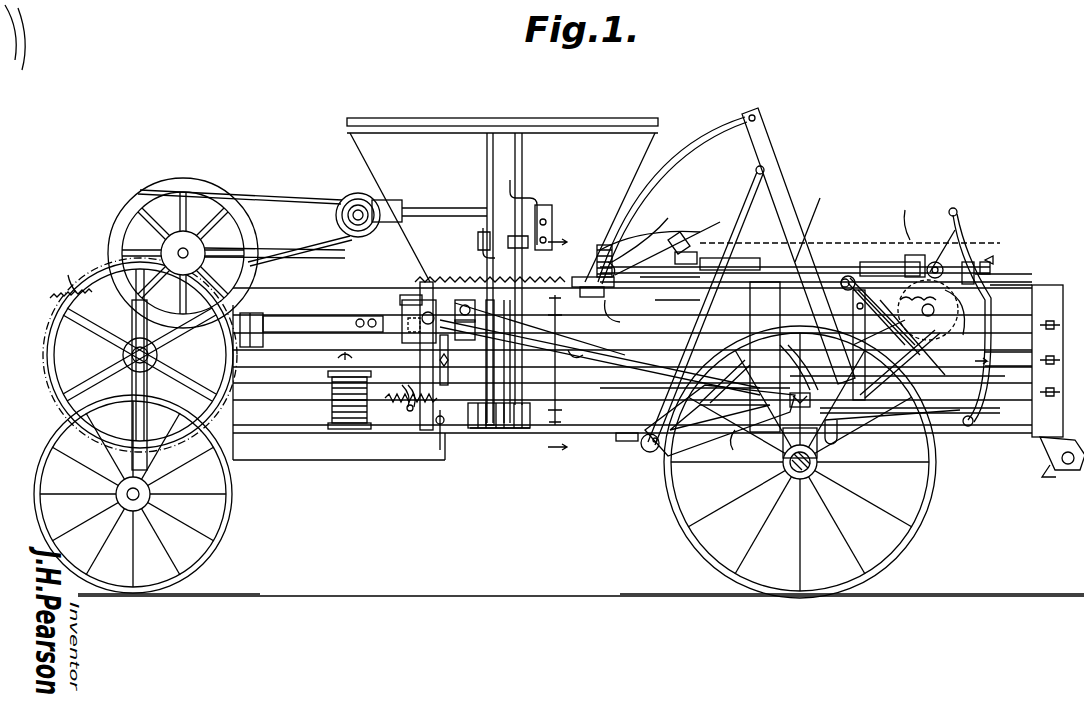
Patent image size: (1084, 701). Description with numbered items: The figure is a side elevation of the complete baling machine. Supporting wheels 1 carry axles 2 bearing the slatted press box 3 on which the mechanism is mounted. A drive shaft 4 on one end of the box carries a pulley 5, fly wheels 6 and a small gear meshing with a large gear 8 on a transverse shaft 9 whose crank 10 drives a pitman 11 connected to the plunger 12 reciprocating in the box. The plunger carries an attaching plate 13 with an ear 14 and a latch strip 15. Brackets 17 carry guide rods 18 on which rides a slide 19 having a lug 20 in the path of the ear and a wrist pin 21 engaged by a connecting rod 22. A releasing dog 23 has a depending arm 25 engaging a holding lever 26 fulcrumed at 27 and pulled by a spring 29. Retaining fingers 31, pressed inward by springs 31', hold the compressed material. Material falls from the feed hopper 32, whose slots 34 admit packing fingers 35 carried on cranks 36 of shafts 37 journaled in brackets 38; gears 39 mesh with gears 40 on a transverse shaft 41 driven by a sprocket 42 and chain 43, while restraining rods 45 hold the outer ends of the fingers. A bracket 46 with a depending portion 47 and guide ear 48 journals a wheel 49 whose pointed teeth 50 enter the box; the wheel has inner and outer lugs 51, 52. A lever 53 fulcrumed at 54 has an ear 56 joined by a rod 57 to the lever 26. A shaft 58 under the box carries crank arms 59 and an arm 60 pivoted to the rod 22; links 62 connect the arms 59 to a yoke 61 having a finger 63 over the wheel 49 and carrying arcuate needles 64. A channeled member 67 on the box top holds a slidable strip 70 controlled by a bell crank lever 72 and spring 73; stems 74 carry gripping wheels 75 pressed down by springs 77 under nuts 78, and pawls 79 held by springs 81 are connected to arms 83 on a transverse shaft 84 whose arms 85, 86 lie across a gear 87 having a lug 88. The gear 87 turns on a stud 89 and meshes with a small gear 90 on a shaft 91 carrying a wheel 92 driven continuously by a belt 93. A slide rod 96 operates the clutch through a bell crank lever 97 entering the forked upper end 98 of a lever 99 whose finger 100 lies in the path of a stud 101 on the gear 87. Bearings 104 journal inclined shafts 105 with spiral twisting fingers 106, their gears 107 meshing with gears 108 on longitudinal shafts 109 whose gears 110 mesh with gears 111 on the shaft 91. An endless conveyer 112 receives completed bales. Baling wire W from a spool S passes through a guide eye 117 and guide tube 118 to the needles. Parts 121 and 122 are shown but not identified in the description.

The supporting wheels 1 is at (222, 540).
The axles 2 is at (150, 492).
The press box 3 is at (1035, 292).
The drive shaft 4 is at (186, 250).
The pulley 5 is at (186, 238).
The fly wheels 6 is at (133, 208).
The large gear 8 is at (70, 280).
The transverse shaft 9 is at (132, 355).
The crank 10 is at (95, 308).
The pitman 11 is at (110, 296).
The plunger 12 is at (300, 385).
The attaching plate 13 is at (258, 318).
The laterally projecting ear 14 is at (252, 340).
The latch strip 15 is at (318, 318).
The brackets 17 is at (382, 353).
The guide rods 18 is at (365, 315).
The slide 19 is at (407, 304).
The lug 20 is at (490, 342).
The wrist pin 21 is at (440, 300).
The connecting rod 22 is at (612, 365).
The releasing dog 23 is at (470, 300).
The depending arm 25 is at (448, 358).
The holding lever 26 is at (444, 425).
The fulcrum 27 is at (450, 438).
The spring 29 is at (405, 405).
The retaining fingers 31 is at (582, 367).
The springs 31' is at (540, 329).
The feed hopper 32 is at (430, 152).
The slots 34 is at (499, 278).
The packing fingers 35 is at (522, 178).
The cranks 36 is at (538, 200).
The shaft 37 is at (450, 209).
The brackets 38 is at (552, 215).
The gears 39 is at (372, 205).
The gears 40 is at (358, 199).
The transverse shaft 41 is at (360, 220).
The sprocket 42 is at (336, 214).
The chain 43 is at (280, 200).
The restraining rods 45 is at (512, 325).
The bracket 46 is at (860, 406).
The depending portion 47 is at (850, 425).
The guide ear 48 is at (839, 438).
The wheel 49 is at (880, 385).
The pointed teeth 50 is at (800, 442).
The inner lug 51 is at (818, 392).
The outer lug 52 is at (858, 362).
The lever 53 is at (886, 345).
The fulcrum 54 is at (869, 310).
The laterally extending ear 56 is at (930, 319).
The rod 57 is at (648, 390).
The shaft 58 is at (648, 450).
The crank arm 59 is at (700, 350).
The arm 60 is at (720, 420).
The yoke 61 is at (755, 158).
The links 62 is at (745, 210).
The finger 63 is at (799, 359).
The arcuate needles 64 is at (683, 152).
The channeled member 67 is at (589, 296).
The strip 70 is at (612, 287).
The bell crank lever 72 is at (597, 265).
The spring 73 is at (531, 269).
The stems 74 is at (650, 233).
The gripping wheel 75 is at (666, 248).
The springs 77 is at (685, 230).
The nut 78 is at (647, 228).
The pawls 79 is at (752, 265).
The spring 81 is at (630, 285).
The arms 83 is at (860, 275).
The transverse shaft 84 is at (842, 278).
The arm 85 is at (928, 310).
The arm 86 is at (918, 344).
The gear 87 is at (950, 310).
The lug 88 is at (958, 320).
The stud 89 is at (976, 258).
The small gear 90 is at (929, 248).
The transverse shaft 91 is at (962, 255).
The wheel 92 is at (915, 255).
The belt 93 is at (822, 240).
The slide rod 96 is at (988, 262).
The bell crank lever 97 is at (995, 263).
The forked upper end 98 is at (1000, 272).
The lever 99 is at (975, 355).
The finger 100 is at (988, 326).
The stud 101 is at (1003, 371).
The bearings 104 is at (712, 256).
The inclined shafts 105 is at (622, 318).
The spiral twisting finger 106 is at (597, 300).
The gear 107 is at (695, 240).
The gears 108 is at (677, 298).
The longitudinal shafts 109 is at (805, 217).
The gears 110 is at (903, 213).
The gears 111 is at (953, 208).
The endless conveyer 112 is at (1062, 468).
The guide eye 117 is at (418, 415).
The guide tube 118 is at (340, 362).
The rod 121 is at (960, 232).
The post 122 is at (767, 357).
The spool S is at (332, 400).
The wire W is at (499, 431).